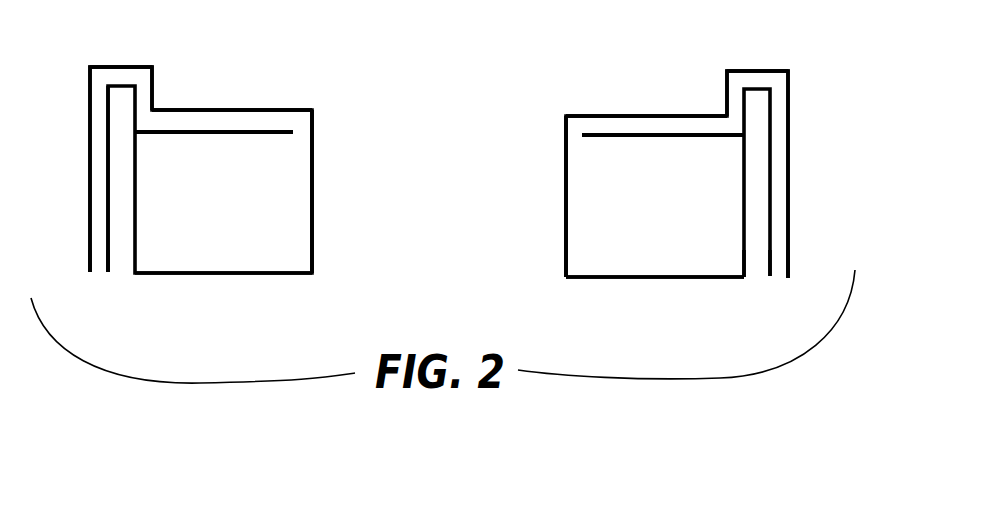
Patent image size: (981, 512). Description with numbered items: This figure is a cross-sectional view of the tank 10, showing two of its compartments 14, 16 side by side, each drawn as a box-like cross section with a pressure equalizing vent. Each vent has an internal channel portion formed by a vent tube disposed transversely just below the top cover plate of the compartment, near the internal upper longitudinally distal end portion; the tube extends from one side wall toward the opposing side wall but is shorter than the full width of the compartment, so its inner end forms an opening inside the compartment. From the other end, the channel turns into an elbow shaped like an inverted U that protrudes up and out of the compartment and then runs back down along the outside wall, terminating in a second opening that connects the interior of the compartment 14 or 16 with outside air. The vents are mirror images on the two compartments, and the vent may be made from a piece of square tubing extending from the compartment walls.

The tank 10 is at (215, 22).
The compartment 14 is at (327, 251).
The compartment 16 is at (548, 268).